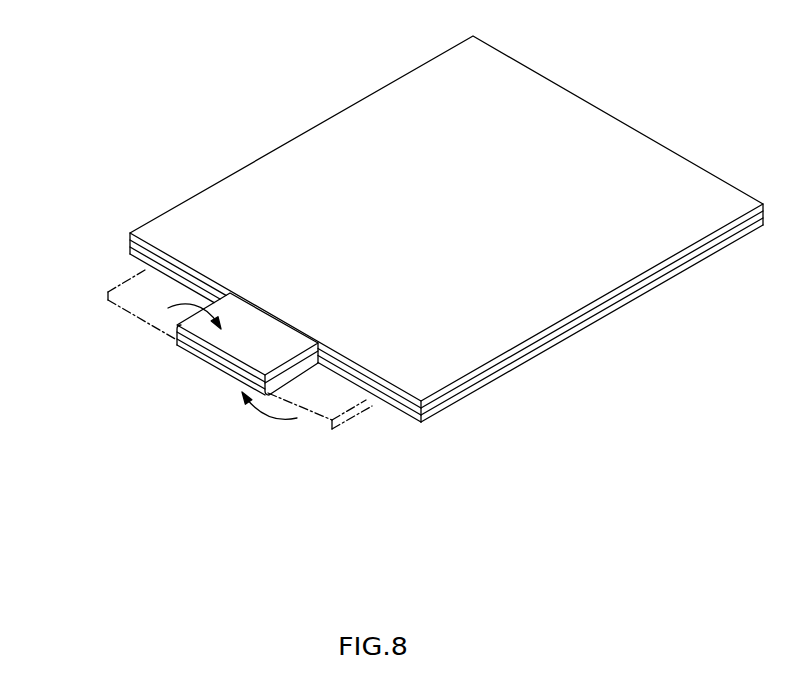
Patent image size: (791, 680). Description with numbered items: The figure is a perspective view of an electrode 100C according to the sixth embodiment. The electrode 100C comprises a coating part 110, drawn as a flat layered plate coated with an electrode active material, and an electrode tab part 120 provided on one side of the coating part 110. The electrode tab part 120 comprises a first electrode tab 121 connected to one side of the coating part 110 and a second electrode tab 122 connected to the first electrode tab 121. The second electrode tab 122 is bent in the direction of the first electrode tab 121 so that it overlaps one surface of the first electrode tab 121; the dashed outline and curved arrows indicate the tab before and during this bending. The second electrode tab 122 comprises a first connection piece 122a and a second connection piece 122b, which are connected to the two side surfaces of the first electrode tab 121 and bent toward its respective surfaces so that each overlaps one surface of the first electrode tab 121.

The electrode 100C is at (278, 97).
The coating part 110 is at (619, 340).
The electrode tab part 120 is at (135, 495).
The first electrode tab 121 is at (186, 344).
The second electrode tab 122 is at (202, 458).
The first connection piece 122a is at (242, 364).
The second connection piece 122b is at (210, 359).